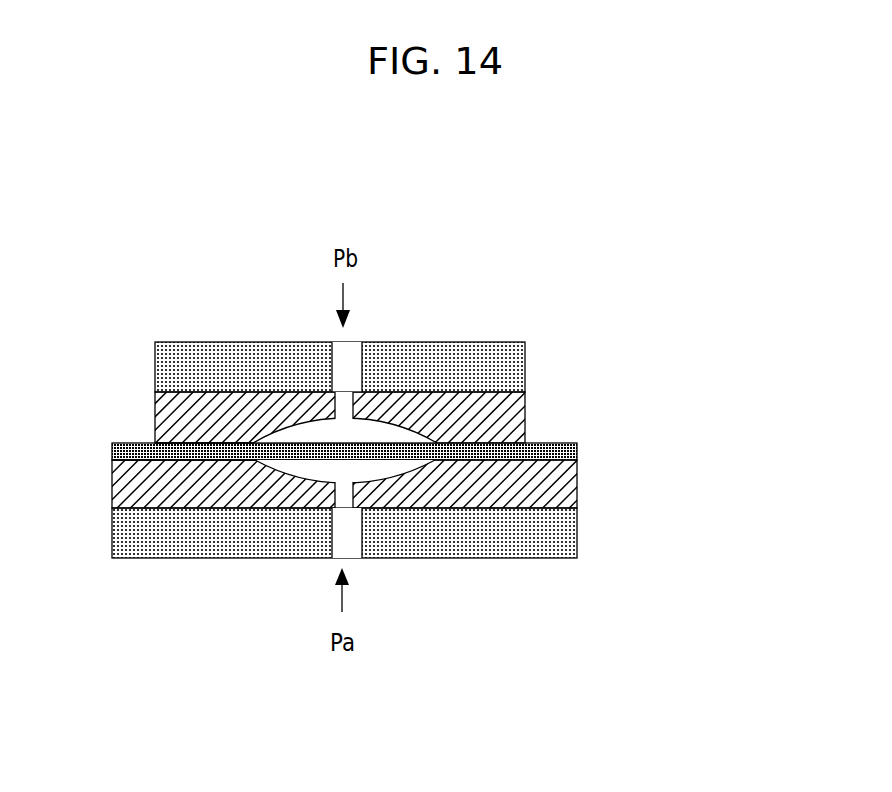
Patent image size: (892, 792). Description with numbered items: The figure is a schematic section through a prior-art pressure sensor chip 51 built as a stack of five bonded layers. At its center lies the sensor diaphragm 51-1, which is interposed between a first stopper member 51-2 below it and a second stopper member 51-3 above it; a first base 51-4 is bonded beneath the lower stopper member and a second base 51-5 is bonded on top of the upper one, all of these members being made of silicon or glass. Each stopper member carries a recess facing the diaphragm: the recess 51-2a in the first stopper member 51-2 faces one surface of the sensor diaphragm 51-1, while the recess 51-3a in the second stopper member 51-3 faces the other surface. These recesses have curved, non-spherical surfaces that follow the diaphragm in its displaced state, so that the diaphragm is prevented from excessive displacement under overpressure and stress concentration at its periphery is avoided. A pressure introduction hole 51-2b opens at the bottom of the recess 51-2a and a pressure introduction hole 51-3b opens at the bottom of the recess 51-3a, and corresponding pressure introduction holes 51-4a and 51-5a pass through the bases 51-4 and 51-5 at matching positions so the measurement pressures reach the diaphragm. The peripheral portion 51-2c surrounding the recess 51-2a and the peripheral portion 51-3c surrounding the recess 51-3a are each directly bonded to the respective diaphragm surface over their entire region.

The pressure sensor chip 51 is at (435, 466).
The sensor diaphragm 51-1 is at (577, 450).
The first stopper member 51-2 is at (411, 579).
The recess 51-2a is at (368, 467).
The pressure introduction hole 51-2b is at (340, 498).
The peripheral portion 51-2c is at (205, 462).
The second stopper member 51-3 is at (403, 323).
The recess 51-3a is at (368, 437).
The pressure introduction hole 51-3b is at (338, 405).
The peripheral portion 51-3c is at (205, 443).
The first base 51-4 is at (435, 619).
The pressure introduction hole 51-4a is at (342, 533).
The second base 51-5 is at (456, 304).
The pressure introduction hole 51-5a is at (345, 367).